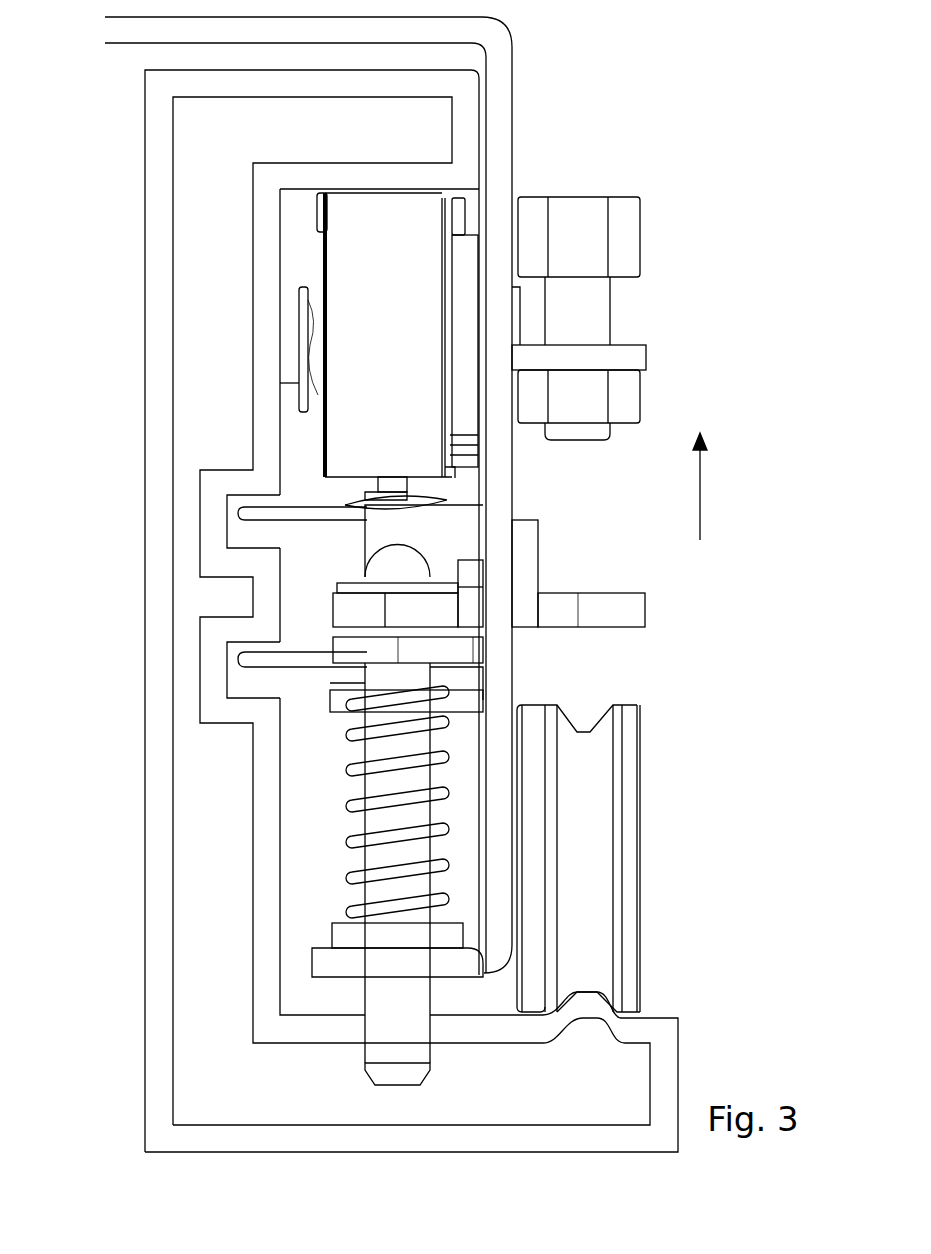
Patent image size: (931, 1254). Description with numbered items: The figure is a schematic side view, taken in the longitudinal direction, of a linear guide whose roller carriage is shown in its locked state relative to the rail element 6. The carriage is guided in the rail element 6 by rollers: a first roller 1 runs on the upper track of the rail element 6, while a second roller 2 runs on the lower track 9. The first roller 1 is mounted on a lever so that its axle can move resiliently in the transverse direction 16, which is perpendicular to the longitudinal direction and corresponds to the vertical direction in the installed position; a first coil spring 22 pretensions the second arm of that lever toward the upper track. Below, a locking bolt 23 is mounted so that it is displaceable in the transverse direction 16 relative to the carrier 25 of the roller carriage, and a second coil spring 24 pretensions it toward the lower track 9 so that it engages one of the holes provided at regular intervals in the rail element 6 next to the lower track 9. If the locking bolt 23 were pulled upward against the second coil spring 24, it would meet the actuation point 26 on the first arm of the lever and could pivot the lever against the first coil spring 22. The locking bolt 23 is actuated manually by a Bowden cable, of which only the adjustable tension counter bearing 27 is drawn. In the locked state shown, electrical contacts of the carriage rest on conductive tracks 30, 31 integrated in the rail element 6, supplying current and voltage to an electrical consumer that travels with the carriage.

The first roller 1 is at (378, 339).
The second roller 2 is at (618, 842).
The rail element 6 is at (160, 228).
The lower track 9 is at (613, 1003).
The transverse direction 16 is at (703, 490).
The first coil spring 22 is at (357, 508).
The locking bolt 23 is at (390, 990).
The second coil spring 24 is at (350, 843).
The carrier 25 is at (497, 153).
The actuation point 26 is at (612, 607).
The adjustable tension counter bearing 27 is at (572, 230).
The conductive track 30 is at (227, 497).
The conductive track 31 is at (235, 645).